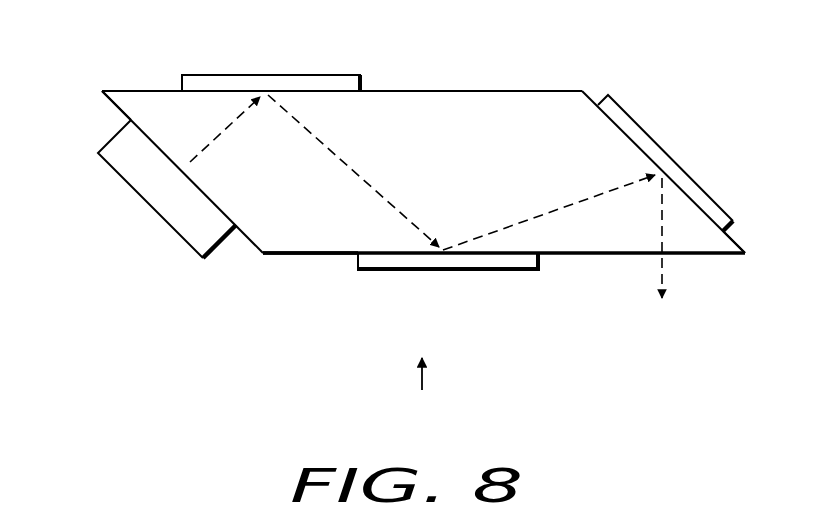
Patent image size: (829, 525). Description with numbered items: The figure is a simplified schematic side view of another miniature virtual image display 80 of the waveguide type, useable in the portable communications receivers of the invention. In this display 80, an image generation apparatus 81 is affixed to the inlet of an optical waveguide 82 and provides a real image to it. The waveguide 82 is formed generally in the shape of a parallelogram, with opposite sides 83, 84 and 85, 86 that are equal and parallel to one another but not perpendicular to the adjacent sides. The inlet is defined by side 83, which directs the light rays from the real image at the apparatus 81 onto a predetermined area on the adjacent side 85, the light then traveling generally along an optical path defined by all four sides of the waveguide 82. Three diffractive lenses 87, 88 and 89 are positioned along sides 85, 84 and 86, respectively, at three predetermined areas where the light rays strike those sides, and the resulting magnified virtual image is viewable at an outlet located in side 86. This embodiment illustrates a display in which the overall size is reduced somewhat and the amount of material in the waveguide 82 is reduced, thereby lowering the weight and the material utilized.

The miniature virtual image display 80 is at (420, 391).
The image generation apparatus 81 is at (145, 200).
The optical waveguide 82 is at (540, 100).
The side 83 is at (110, 103).
The side 84 is at (737, 241).
The side 85 is at (432, 89).
The side 86 is at (315, 243).
The diffractive lens 87 is at (226, 74).
The diffractive lens 88 is at (643, 128).
The diffractive lens 89 is at (483, 260).